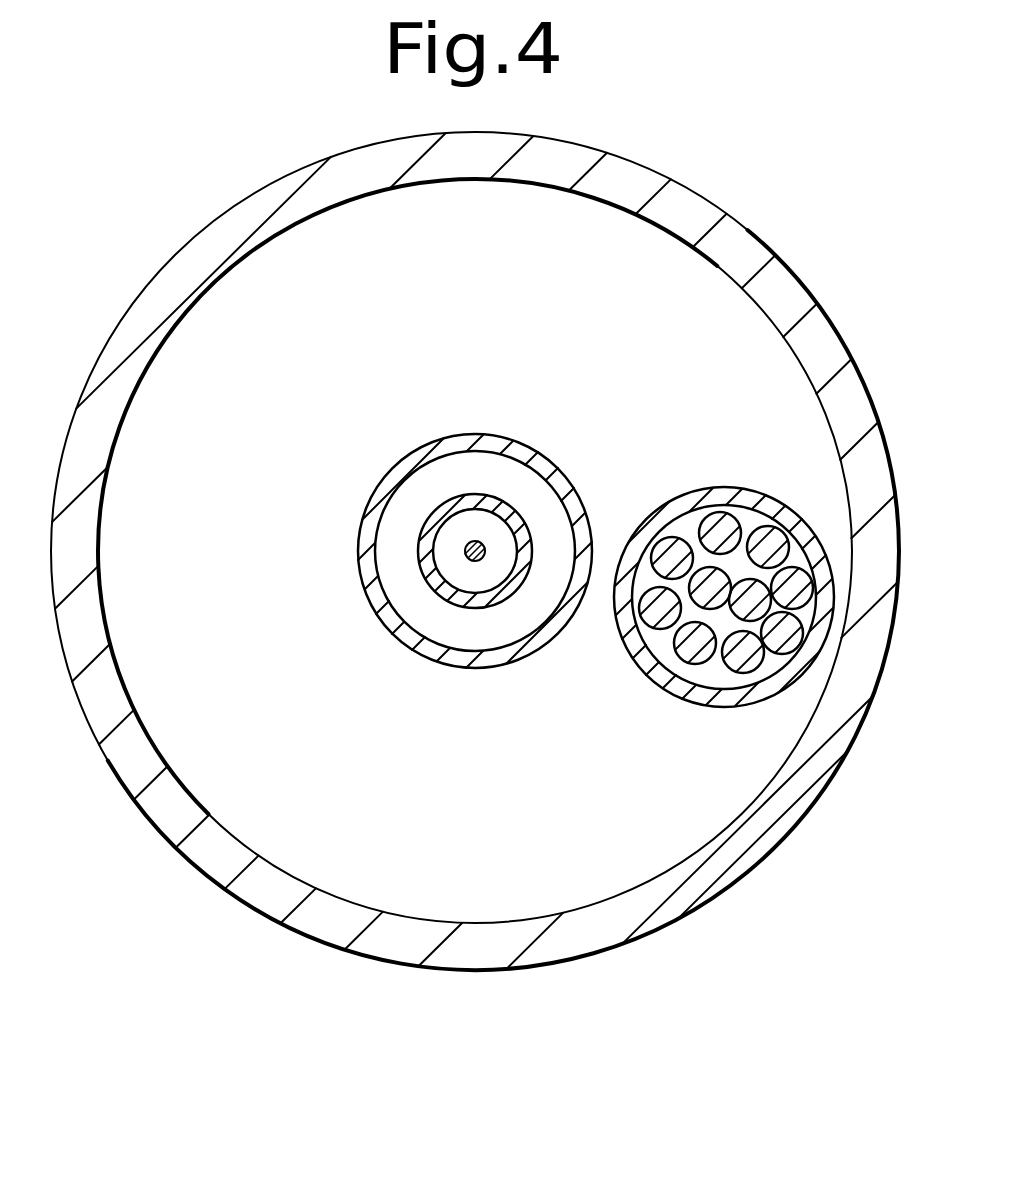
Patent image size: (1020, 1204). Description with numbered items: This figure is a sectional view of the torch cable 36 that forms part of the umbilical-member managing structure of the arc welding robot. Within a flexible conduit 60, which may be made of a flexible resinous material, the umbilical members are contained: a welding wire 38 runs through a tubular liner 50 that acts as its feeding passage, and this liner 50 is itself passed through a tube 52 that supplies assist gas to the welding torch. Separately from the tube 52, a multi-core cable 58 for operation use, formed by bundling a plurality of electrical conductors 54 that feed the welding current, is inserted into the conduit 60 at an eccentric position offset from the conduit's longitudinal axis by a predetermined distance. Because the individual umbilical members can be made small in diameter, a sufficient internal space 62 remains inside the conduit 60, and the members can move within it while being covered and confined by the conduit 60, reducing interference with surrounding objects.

The torch cable 36 is at (475, 598).
The welding wire 38 is at (475, 545).
The tubular liner 50 is at (425, 537).
The tube 52 is at (412, 633).
The electrical conductor 54 is at (697, 650).
The multi-core cable 58 is at (713, 478).
The conduit 60 is at (501, 970).
The internal space 62 is at (247, 758).